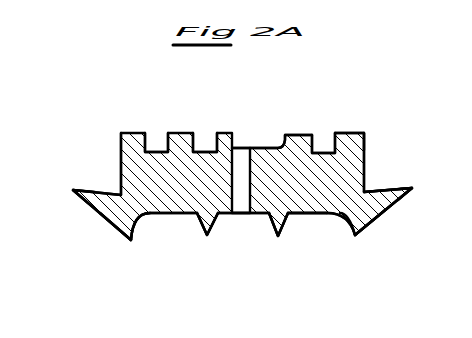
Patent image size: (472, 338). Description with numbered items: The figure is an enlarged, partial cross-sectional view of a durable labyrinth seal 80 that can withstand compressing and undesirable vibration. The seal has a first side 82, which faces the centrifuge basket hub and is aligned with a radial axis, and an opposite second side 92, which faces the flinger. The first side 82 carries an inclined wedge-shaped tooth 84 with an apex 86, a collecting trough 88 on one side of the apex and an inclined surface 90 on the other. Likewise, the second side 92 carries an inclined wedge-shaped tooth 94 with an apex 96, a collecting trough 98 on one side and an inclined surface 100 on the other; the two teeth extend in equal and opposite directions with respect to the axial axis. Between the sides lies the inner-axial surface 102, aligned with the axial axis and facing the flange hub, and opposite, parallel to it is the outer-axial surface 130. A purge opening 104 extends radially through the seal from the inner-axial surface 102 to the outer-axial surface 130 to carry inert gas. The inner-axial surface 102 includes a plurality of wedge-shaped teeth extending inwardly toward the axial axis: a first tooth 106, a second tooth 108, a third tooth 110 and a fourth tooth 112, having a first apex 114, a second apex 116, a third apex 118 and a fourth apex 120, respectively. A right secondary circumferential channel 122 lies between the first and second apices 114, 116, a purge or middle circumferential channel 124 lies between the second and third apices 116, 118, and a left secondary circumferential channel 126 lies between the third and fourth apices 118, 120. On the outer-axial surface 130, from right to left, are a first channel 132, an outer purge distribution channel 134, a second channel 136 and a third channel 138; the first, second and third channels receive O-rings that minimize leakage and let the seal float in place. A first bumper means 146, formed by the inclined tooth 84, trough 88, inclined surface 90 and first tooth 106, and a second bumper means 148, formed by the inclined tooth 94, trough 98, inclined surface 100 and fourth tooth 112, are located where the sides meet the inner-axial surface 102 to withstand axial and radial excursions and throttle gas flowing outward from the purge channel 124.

The labyrinth seal 80 is at (135, 158).
The first side 82 is at (366, 141).
The inclined wedge-shaped tooth 84 is at (394, 200).
The apex 86 is at (411, 188).
The collecting trough 88 is at (383, 191).
The inclined surface 90 is at (386, 212).
The second side 92 is at (119, 139).
The inclined wedge-shaped tooth 94 is at (100, 213).
The apex 96 is at (73, 190).
The collecting trough 98 is at (105, 190).
The inclined surface 100 is at (114, 229).
The inner-axial surface 102 is at (296, 222).
The purge opening 104 is at (245, 147).
The first tooth 106 is at (344, 232).
The second tooth 108 is at (277, 238).
The third tooth 110 is at (203, 226).
The fourth tooth 112 is at (147, 218).
The first apex 114 is at (352, 240).
The second apex 116 is at (278, 240).
The third apex 118 is at (207, 237).
The fourth apex 120 is at (131, 243).
The right secondary circumferential channel 122 is at (312, 215).
The purge circumferential channel 124 is at (246, 214).
The left secondary circumferential channel 126 is at (175, 214).
The outer-axial surface 130 is at (352, 132).
The first channel 132 is at (330, 152).
The outer purge distribution channel 134 is at (274, 147).
The second channel 136 is at (206, 151).
The third channel 138 is at (155, 151).
The first bumper means 146 is at (370, 228).
The second bumper means 148 is at (124, 241).